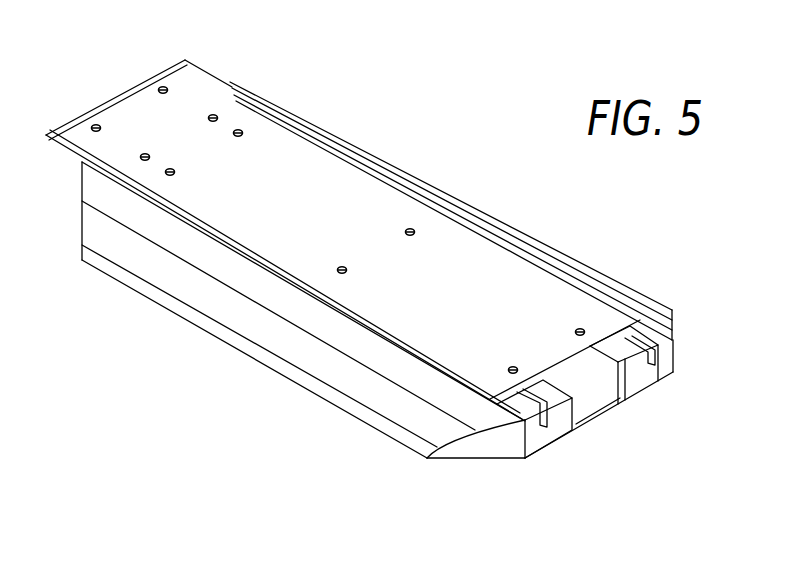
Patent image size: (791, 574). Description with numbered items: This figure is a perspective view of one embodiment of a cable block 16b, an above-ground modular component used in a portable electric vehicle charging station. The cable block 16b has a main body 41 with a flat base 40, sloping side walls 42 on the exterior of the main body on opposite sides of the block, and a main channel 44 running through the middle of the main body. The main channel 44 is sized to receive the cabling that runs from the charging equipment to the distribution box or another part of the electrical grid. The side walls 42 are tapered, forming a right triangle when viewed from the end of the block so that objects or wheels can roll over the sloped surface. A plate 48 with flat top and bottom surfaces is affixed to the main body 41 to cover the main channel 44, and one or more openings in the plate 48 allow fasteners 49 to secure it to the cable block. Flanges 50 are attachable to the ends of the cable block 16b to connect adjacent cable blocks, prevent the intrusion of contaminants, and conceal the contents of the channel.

The cable block 16b is at (449, 72).
The flat base 40 is at (624, 399).
The main body 41 is at (619, 410).
The sloping side walls 42 is at (377, 296).
The main channel 44 is at (624, 426).
The plate 48 is at (453, 217).
The fasteners 49 is at (323, 195).
The flanges 50 is at (343, 214).